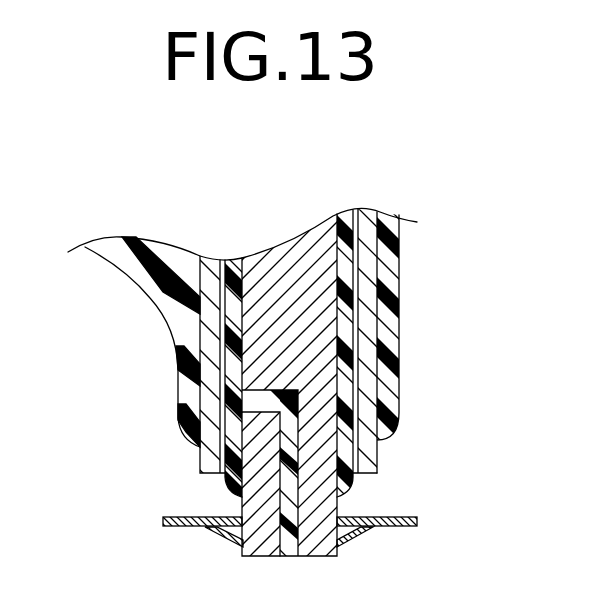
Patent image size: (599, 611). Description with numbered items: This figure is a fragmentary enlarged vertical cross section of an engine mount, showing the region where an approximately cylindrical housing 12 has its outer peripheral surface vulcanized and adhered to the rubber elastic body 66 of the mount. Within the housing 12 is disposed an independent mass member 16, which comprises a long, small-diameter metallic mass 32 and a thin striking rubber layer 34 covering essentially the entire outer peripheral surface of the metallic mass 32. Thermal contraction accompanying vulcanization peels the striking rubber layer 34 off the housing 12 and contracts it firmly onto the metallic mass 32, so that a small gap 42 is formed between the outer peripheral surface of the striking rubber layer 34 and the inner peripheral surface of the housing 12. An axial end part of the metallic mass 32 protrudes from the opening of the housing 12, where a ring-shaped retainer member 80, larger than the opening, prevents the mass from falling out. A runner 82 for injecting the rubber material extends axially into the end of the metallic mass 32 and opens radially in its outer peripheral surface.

The independent mass member 16 is at (335, 200).
The metallic mass 32 is at (290, 293).
The striking rubber layer 34 is at (237, 307).
The small gap 42 is at (352, 342).
The housing 12 is at (213, 385).
The rubber elastic body 66 is at (118, 253).
The runner 82 is at (283, 492).
The retainer member 80 is at (392, 527).